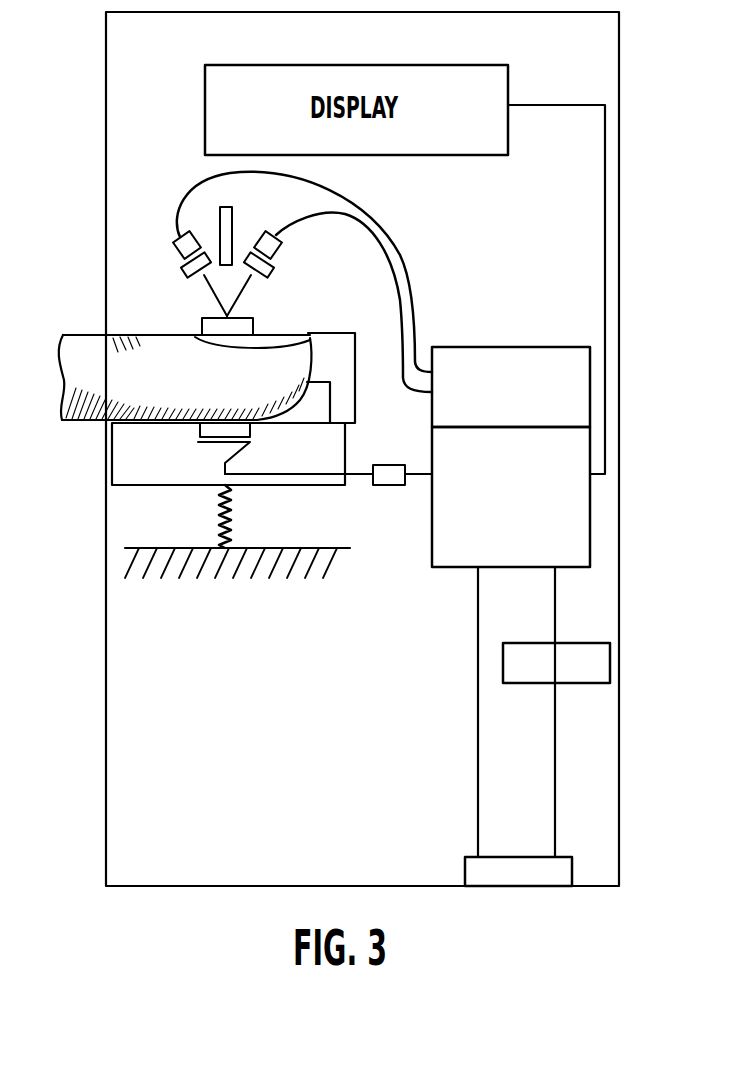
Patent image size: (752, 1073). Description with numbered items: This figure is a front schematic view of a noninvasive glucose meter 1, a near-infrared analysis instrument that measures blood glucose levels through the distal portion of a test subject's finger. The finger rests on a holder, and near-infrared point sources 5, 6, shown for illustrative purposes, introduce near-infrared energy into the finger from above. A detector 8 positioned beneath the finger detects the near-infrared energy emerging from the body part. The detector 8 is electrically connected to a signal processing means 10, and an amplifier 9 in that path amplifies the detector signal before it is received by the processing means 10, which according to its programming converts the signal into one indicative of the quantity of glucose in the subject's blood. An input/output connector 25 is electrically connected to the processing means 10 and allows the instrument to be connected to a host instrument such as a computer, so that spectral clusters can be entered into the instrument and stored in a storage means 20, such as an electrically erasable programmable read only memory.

The noninvasive glucose meter 1 is at (619, 83).
The near-infrared point source 5 is at (181, 262).
The near-infrared point source 6 is at (272, 258).
The detector 8 is at (236, 452).
The amplifier 9 is at (390, 488).
The signal processing means 10 is at (450, 567).
The storage means 20 is at (578, 643).
The input/output connector 25 is at (516, 857).